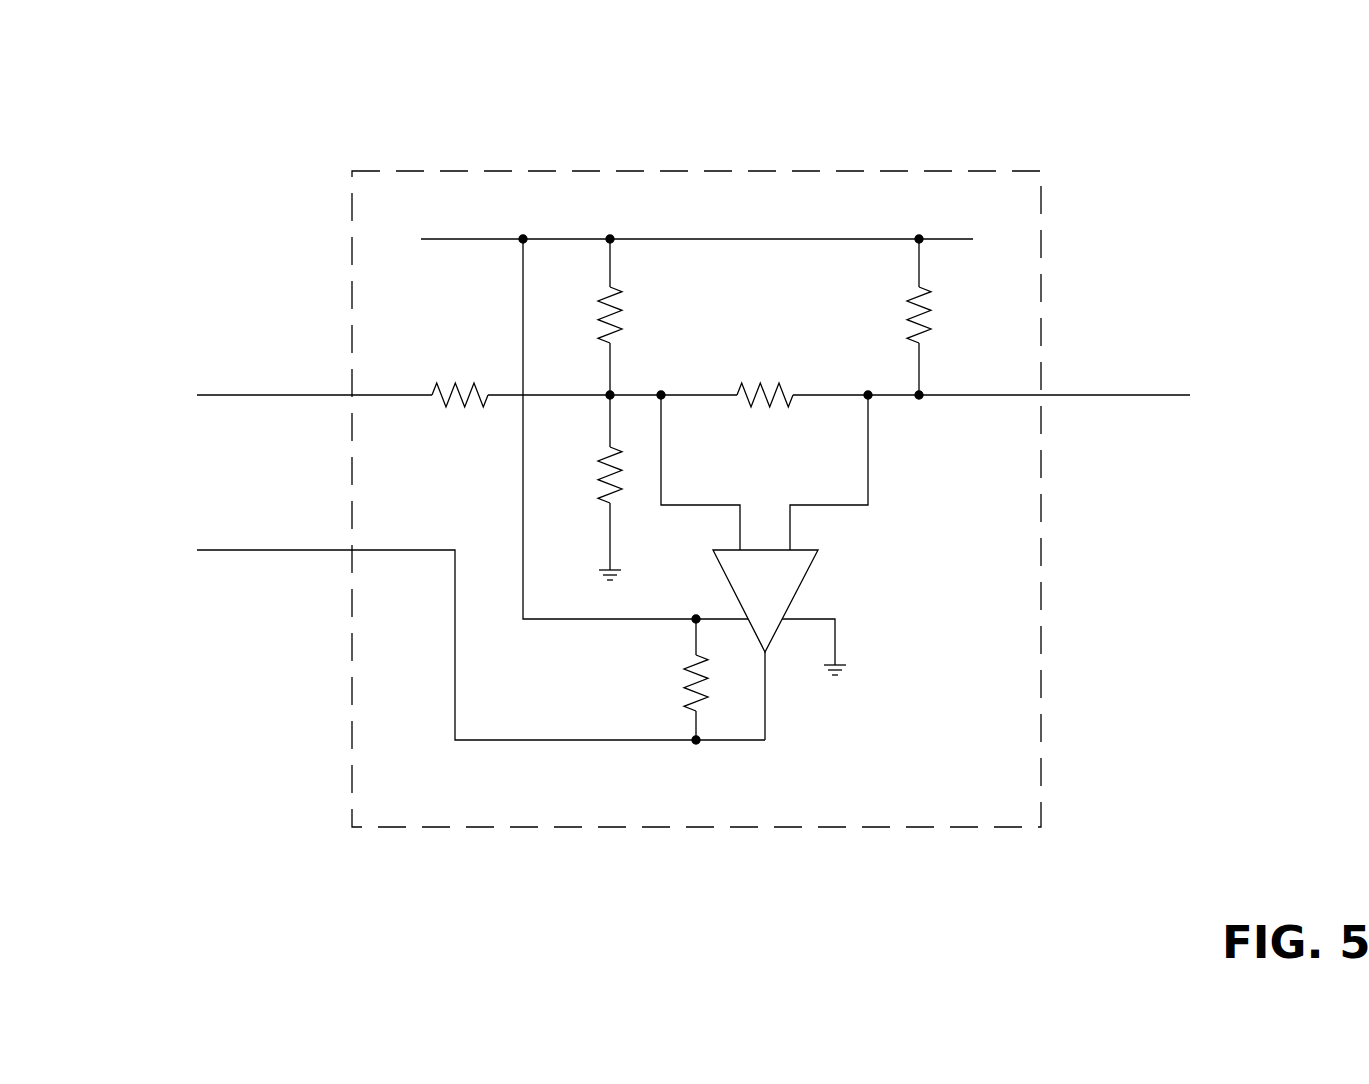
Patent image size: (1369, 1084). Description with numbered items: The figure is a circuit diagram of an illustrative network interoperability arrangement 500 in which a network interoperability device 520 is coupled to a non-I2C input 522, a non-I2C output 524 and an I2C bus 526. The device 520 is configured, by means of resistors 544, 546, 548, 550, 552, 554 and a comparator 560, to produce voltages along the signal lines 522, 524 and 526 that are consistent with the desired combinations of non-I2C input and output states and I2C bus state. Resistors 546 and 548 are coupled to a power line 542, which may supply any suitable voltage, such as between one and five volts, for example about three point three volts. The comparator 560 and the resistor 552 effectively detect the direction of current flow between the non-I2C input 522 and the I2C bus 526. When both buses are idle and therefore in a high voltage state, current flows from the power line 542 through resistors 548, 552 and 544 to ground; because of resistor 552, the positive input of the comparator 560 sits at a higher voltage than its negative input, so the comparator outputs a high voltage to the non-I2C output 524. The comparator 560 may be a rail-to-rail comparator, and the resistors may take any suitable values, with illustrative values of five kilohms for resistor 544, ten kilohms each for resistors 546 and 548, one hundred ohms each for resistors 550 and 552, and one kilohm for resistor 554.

The I2C translation circuit 500 is at (140, 80).
The network interoperability device 520 is at (712, 129).
The non-I2C input 522 is at (314, 379).
The non-I2C output 524 is at (481, 628).
The I2C bus 526 is at (1054, 379).
The power line 542 is at (731, 240).
The resistor 544 is at (598, 472).
The resistor 546 is at (628, 318).
The resistor 548 is at (905, 318).
The resistor 550 is at (463, 380).
The resistor 552 is at (764, 378).
The resistor 554 is at (676, 688).
The comparator 560 is at (800, 583).